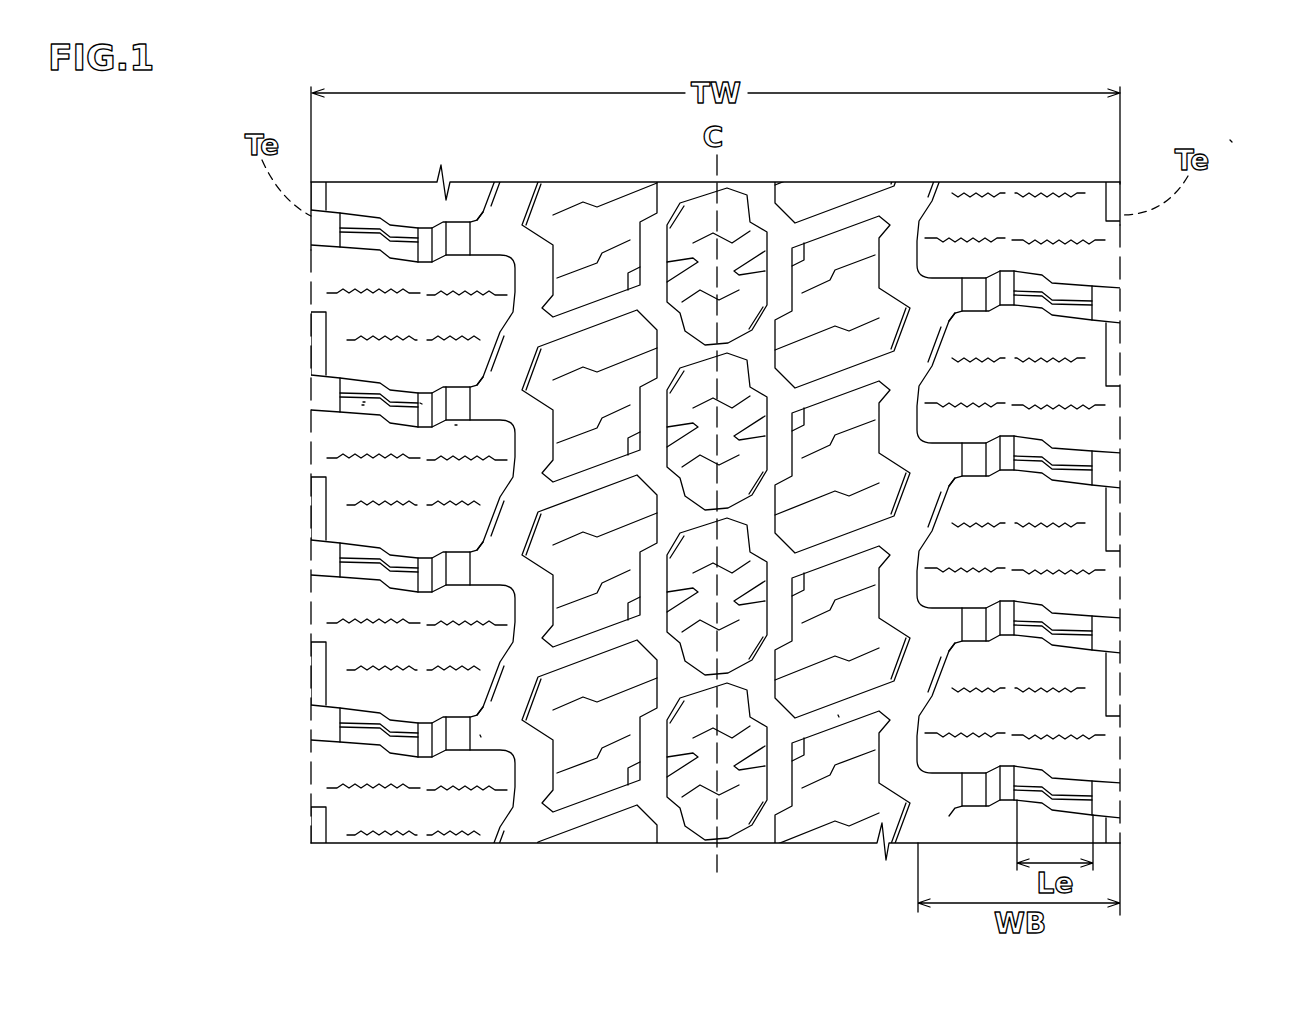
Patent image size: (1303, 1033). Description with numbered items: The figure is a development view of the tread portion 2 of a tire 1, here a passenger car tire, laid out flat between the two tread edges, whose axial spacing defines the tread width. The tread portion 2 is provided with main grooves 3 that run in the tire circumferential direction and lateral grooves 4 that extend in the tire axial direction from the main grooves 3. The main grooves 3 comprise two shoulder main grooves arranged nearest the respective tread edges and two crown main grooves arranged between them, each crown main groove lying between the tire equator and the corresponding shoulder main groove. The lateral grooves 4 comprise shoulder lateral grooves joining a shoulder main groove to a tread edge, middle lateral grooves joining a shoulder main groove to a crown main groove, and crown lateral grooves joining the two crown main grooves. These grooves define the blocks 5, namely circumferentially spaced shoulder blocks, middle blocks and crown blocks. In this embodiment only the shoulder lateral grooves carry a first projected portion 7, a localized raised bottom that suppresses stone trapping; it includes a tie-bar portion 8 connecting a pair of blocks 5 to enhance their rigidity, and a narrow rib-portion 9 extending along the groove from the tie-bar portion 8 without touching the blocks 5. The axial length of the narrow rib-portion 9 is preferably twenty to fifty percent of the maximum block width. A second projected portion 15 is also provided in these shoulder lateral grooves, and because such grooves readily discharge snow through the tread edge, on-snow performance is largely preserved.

The tire 1 is at (1244, 134).
The tread portion 2 is at (1137, 161).
The main grooves 3 is at (515, 210).
The lateral grooves 4 is at (480, 735).
The blocks 5 is at (838, 265).
The first projected portion 7 is at (356, 415).
The tie-bar portion 8 is at (426, 394).
The narrow rib-portion 9 is at (363, 402).
The second projected portion 15 is at (451, 437).